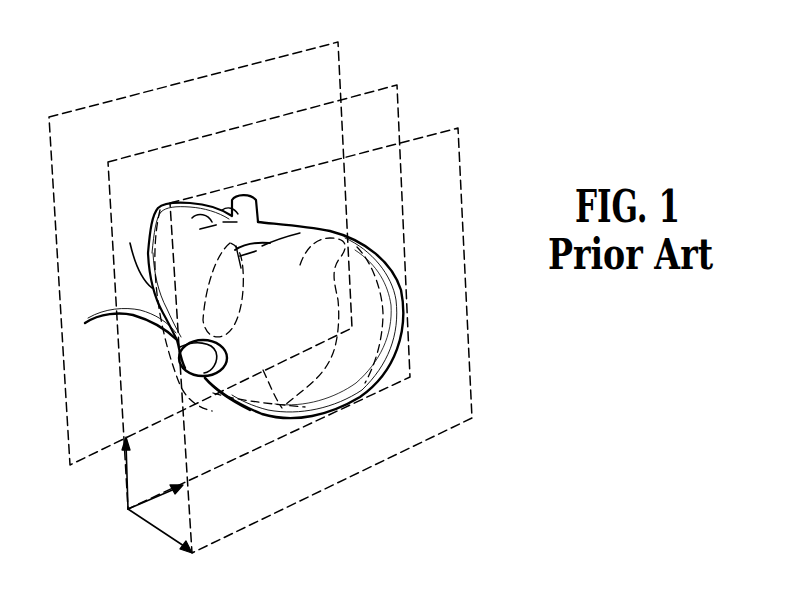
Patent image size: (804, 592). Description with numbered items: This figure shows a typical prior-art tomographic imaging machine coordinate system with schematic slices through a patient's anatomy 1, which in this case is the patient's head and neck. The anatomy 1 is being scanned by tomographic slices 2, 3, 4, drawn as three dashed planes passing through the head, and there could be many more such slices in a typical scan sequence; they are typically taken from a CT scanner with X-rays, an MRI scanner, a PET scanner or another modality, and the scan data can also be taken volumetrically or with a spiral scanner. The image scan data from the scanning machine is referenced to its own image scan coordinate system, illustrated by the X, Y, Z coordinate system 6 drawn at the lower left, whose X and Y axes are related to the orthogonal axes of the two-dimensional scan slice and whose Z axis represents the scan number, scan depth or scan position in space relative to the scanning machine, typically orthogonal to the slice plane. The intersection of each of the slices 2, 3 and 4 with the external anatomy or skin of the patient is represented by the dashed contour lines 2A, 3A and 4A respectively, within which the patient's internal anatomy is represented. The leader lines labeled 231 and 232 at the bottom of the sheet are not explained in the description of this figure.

The patient's anatomy 1 is at (377, 253).
The tomographic slice 2 is at (312, 45).
The tomographic slice 3 is at (372, 86).
The tomographic slice 4 is at (435, 130).
The contour line 2A is at (227, 320).
The contour line 3A is at (333, 333).
The contour line 4A is at (382, 302).
The X, Y, Z coordinate system 6 is at (128, 509).
The element referenced off-sheet 231 is at (530, 591).
The element referenced off-sheet 232 is at (387, 591).